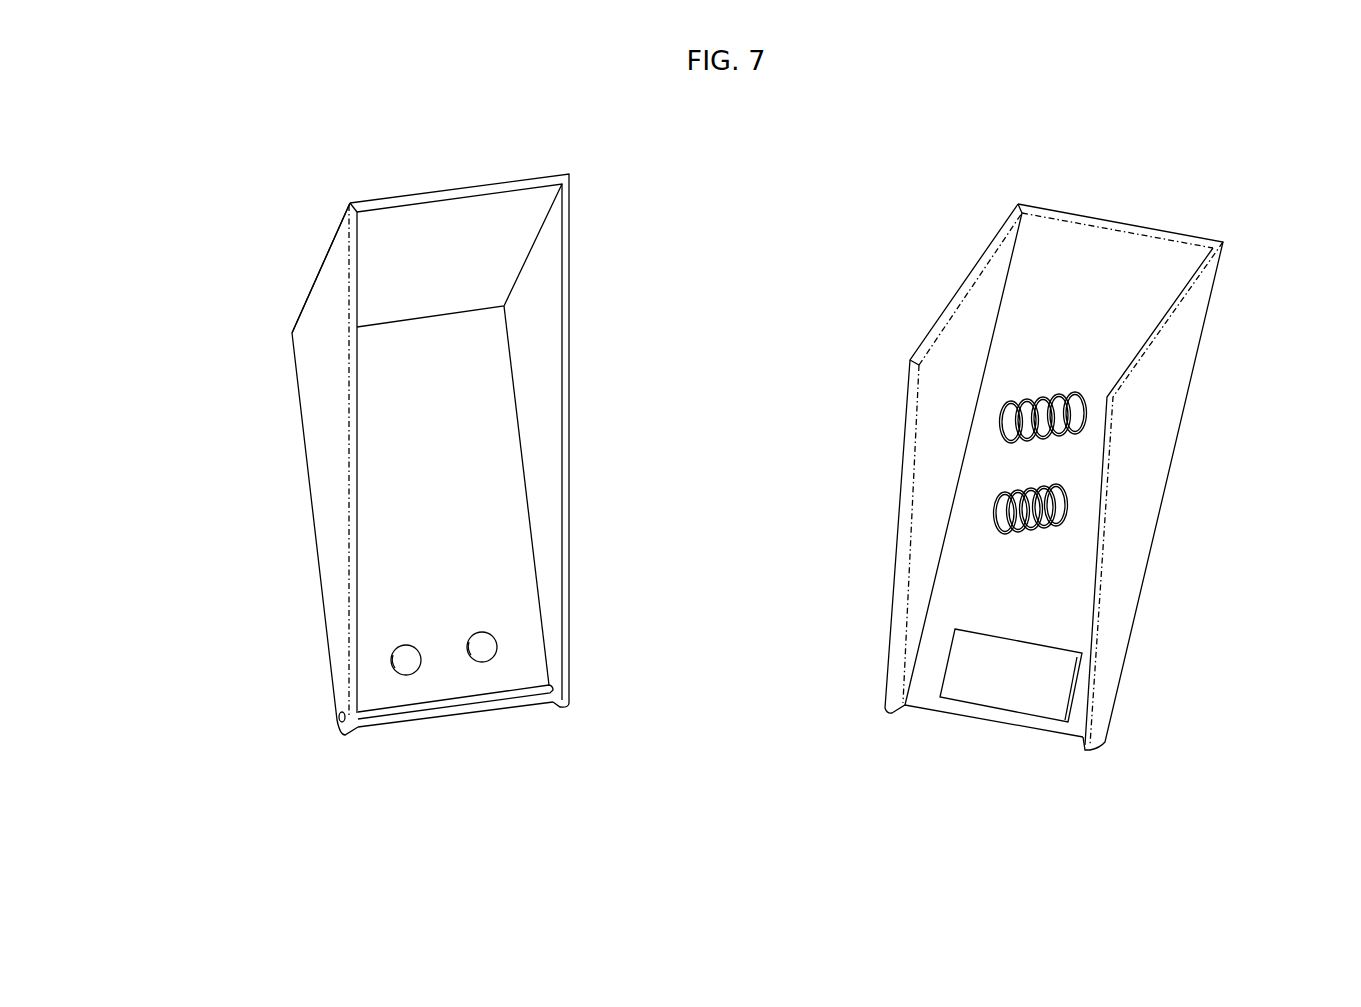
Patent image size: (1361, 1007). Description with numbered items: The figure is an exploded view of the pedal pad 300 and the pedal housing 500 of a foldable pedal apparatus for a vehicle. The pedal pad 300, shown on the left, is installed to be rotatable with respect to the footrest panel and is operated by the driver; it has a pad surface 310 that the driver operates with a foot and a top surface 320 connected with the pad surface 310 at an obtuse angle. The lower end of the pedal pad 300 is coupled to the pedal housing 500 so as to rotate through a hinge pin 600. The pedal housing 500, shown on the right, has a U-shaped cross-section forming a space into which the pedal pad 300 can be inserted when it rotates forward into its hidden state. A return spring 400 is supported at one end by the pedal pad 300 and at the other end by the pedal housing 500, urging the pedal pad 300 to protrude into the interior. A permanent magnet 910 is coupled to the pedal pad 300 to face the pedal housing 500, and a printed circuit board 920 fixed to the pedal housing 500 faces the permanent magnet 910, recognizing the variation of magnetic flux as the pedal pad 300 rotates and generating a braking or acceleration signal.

The pedal pad 300 is at (384, 486).
The pad surface 310 is at (318, 567).
The top surface 320 is at (313, 283).
The hinge pin 600 is at (526, 693).
The permanent magnet 910 is at (483, 653).
The pedal housing 500 is at (1109, 485).
The return spring 400 is at (1066, 505).
The printed circuit board 920 is at (997, 677).